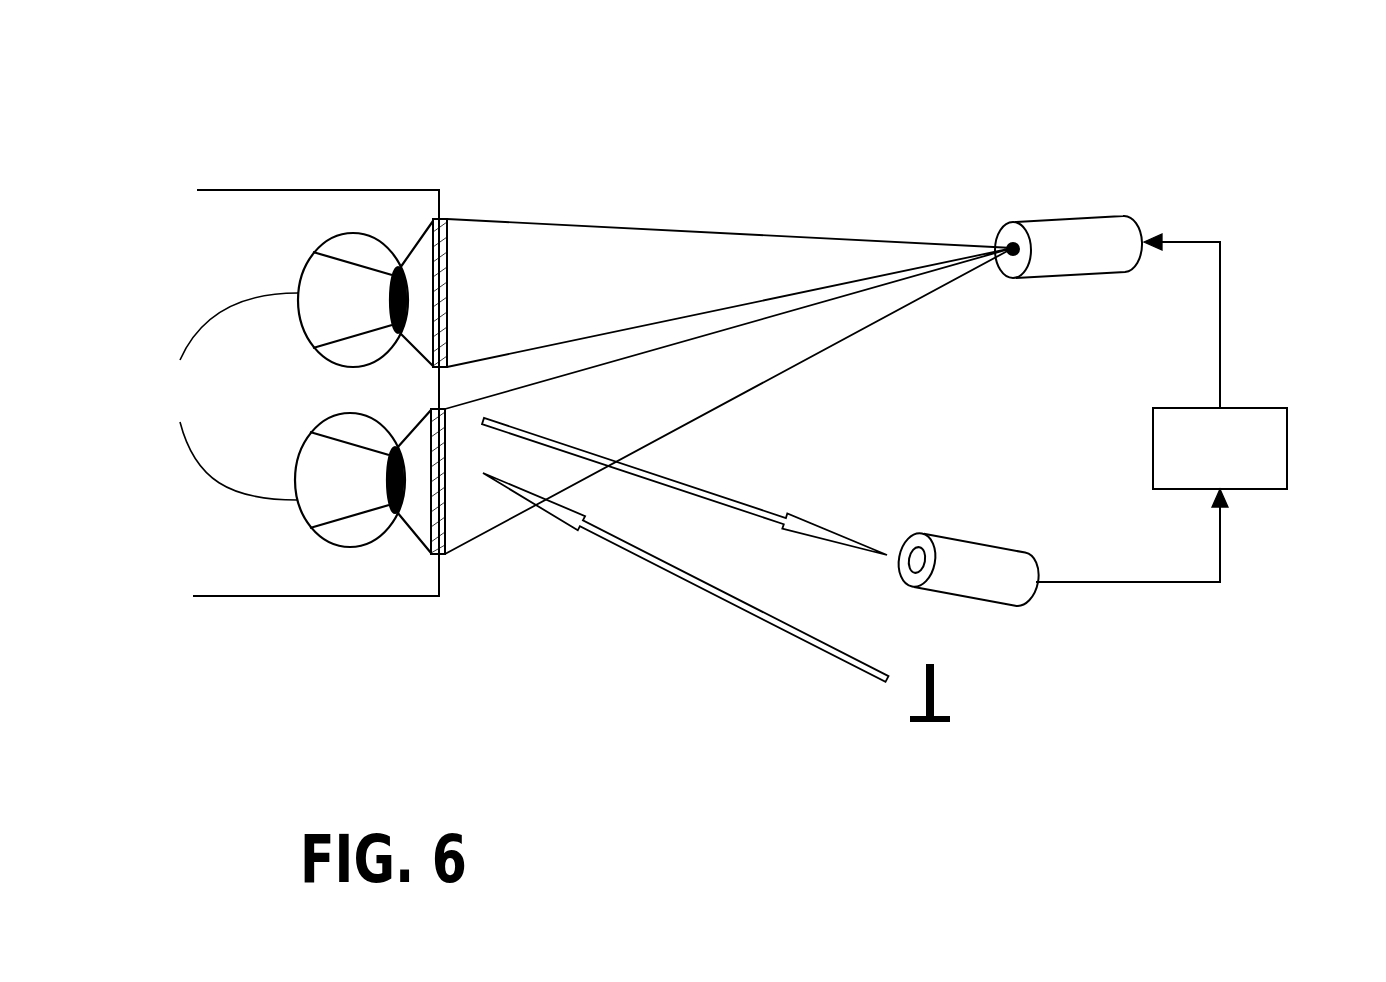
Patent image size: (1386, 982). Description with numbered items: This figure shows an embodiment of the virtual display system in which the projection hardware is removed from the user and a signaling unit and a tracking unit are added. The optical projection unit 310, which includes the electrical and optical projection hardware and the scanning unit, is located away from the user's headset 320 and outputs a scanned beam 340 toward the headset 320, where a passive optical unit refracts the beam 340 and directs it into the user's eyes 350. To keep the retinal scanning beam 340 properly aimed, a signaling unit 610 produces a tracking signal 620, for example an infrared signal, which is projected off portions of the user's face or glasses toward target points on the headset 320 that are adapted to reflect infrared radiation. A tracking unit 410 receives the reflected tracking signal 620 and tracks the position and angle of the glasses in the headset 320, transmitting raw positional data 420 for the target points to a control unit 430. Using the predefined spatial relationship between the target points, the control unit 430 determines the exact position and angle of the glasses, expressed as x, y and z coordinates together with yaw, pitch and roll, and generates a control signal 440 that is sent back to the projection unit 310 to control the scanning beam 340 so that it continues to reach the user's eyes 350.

The optical projection unit 310 is at (1073, 248).
The headset 320 is at (355, 192).
The scanned beam 340 is at (795, 275).
The user's eyes 350 is at (287, 387).
The tracking unit 410 is at (1005, 557).
The positional data 420 is at (1222, 562).
The control unit 430 is at (1153, 413).
The control signal 440 is at (1222, 292).
The signaling unit 610 is at (937, 723).
The tracking signal 620 is at (630, 552).